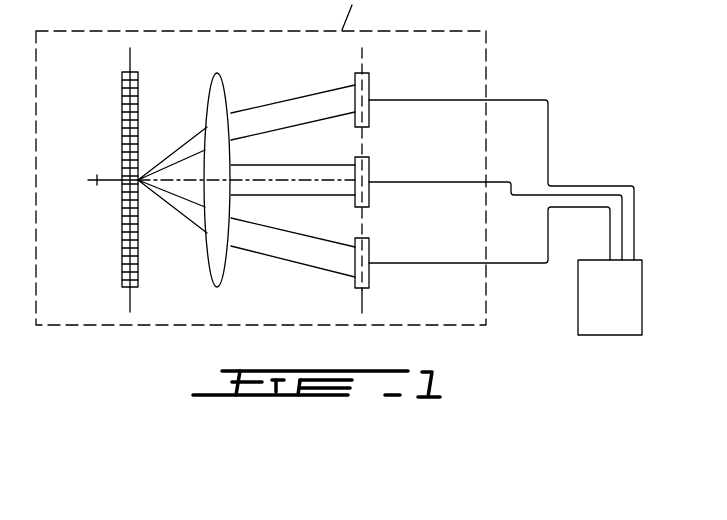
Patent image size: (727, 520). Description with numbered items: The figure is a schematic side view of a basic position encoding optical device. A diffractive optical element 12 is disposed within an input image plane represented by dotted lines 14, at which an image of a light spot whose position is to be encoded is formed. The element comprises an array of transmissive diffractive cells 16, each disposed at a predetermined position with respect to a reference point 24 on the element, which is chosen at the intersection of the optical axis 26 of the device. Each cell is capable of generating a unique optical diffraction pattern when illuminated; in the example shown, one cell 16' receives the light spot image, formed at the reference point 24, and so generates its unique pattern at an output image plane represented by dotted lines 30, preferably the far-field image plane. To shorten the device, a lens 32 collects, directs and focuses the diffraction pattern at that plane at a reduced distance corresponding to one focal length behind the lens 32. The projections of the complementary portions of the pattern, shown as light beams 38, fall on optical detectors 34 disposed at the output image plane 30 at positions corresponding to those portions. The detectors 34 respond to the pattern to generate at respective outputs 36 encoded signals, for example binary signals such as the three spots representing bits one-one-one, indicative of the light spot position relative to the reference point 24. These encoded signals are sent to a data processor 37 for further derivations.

The diffractive optical element 12 is at (122, 96).
The input image plane 14 is at (128, 53).
The diffractive cells 16 is at (158, 164).
The illuminated diffractive cell 16' is at (172, 173).
The reference point 24 is at (122, 177).
The optical axis 26 is at (97, 186).
The output image plane 30 is at (367, 60).
The lens 32 is at (219, 88).
The optical detectors 34 is at (369, 118).
The outputs 36 is at (369, 98).
The data processor 37 is at (627, 313).
The light beams 38 is at (312, 107).